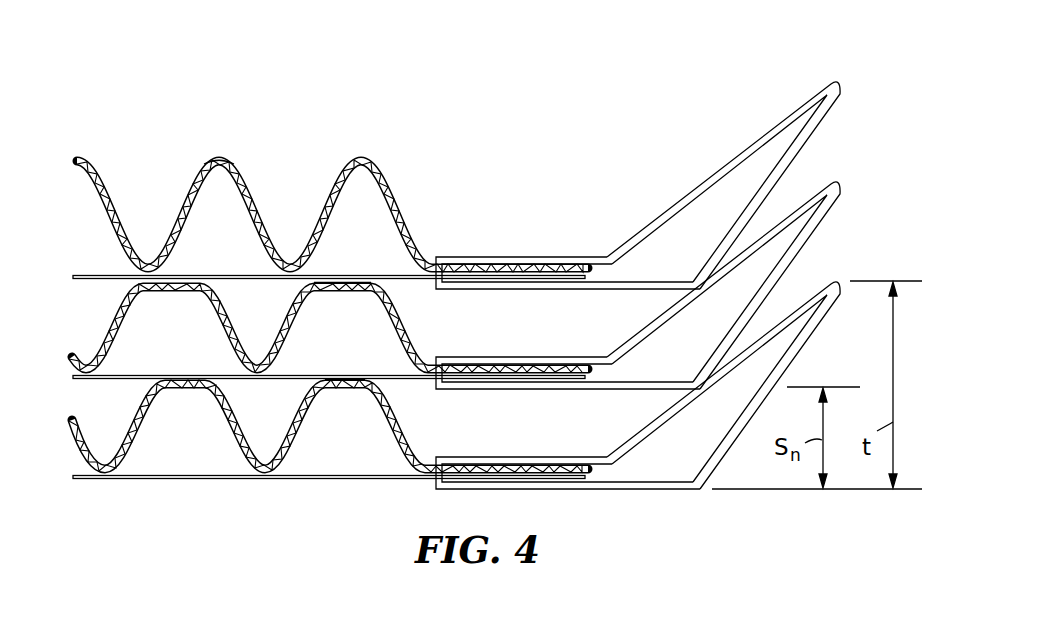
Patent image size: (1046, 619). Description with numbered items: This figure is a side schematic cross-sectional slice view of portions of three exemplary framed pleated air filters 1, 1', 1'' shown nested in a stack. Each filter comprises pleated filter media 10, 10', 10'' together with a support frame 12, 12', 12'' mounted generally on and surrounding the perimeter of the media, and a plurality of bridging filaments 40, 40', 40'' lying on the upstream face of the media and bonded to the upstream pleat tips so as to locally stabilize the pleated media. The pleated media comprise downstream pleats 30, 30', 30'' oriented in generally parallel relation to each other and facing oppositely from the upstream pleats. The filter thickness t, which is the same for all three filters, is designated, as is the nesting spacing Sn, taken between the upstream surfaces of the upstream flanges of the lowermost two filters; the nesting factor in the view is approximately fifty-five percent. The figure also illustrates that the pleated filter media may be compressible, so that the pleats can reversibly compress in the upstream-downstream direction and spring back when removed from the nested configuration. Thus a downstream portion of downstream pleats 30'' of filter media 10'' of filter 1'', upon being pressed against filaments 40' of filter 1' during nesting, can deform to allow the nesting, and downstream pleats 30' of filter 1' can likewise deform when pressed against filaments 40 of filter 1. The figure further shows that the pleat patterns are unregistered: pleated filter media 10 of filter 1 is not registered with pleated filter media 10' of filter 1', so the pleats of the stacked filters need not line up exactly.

The framed air filter 1 is at (667, 161).
The framed air filter 1' is at (670, 261).
The framed air filter 1'' is at (658, 361).
The pleated filter media 10 is at (323, 198).
The pleated filter media 10' is at (325, 302).
The pleated filter media 10'' is at (328, 401).
The support frame 12 is at (729, 161).
The support frame 12' is at (732, 261).
The support frame 12'' is at (735, 361).
The downstream pleats 30 is at (237, 144).
The downstream pleats 30' is at (344, 258).
The downstream pleats 30'' is at (335, 355).
The bridging filaments 40 is at (311, 262).
The bridging filaments 40' is at (329, 361).
The bridging filaments 40'' is at (329, 498).